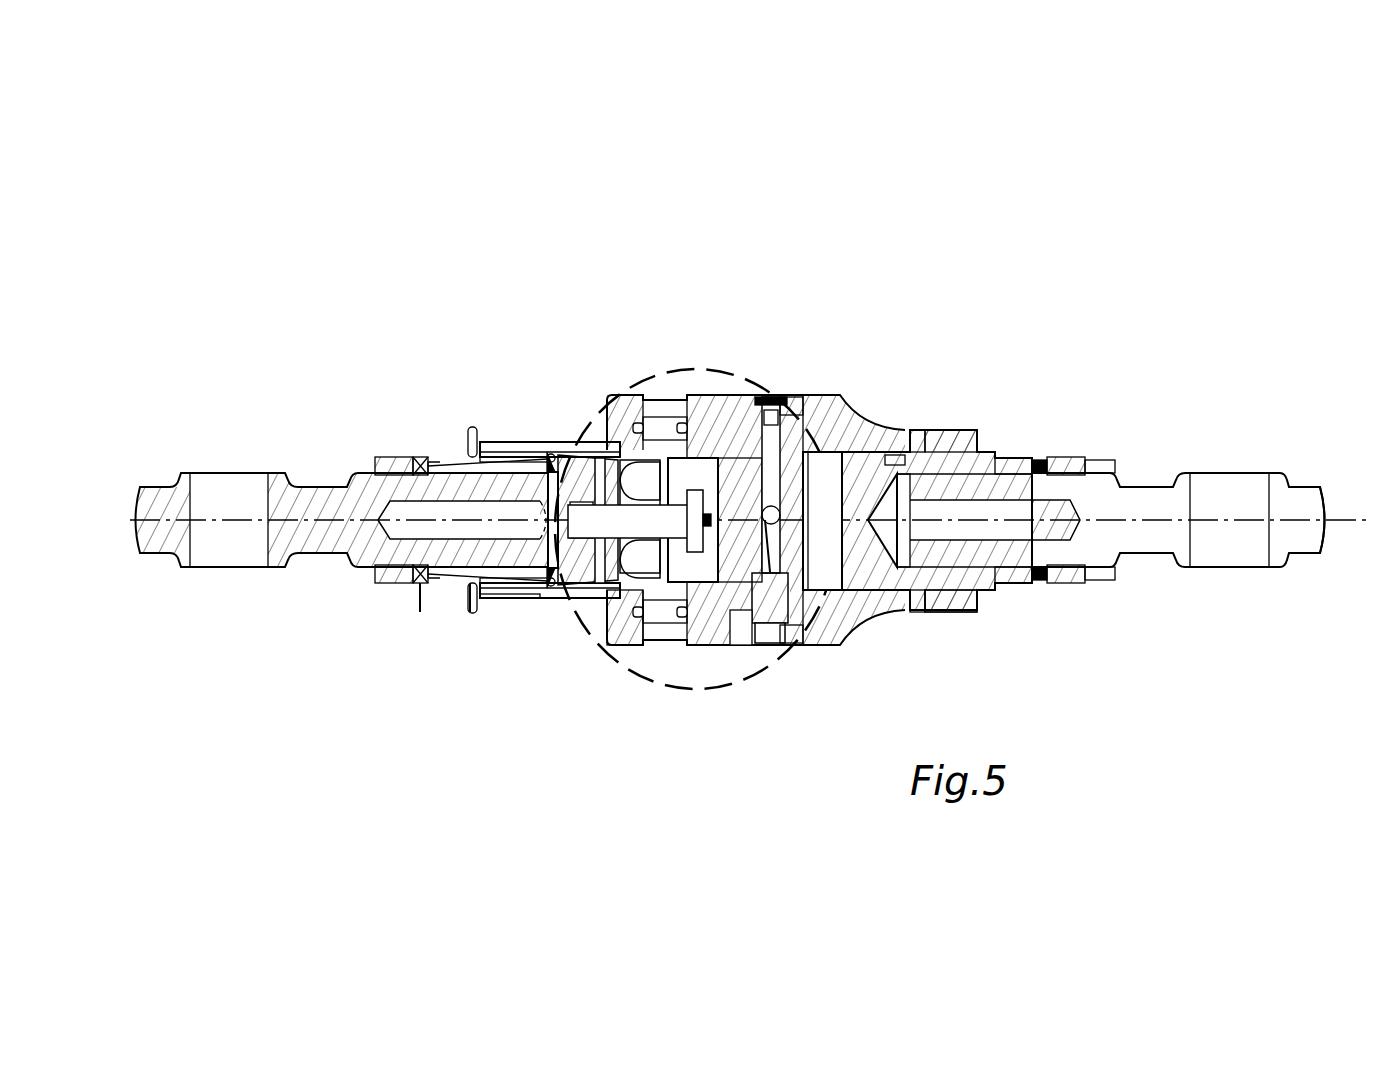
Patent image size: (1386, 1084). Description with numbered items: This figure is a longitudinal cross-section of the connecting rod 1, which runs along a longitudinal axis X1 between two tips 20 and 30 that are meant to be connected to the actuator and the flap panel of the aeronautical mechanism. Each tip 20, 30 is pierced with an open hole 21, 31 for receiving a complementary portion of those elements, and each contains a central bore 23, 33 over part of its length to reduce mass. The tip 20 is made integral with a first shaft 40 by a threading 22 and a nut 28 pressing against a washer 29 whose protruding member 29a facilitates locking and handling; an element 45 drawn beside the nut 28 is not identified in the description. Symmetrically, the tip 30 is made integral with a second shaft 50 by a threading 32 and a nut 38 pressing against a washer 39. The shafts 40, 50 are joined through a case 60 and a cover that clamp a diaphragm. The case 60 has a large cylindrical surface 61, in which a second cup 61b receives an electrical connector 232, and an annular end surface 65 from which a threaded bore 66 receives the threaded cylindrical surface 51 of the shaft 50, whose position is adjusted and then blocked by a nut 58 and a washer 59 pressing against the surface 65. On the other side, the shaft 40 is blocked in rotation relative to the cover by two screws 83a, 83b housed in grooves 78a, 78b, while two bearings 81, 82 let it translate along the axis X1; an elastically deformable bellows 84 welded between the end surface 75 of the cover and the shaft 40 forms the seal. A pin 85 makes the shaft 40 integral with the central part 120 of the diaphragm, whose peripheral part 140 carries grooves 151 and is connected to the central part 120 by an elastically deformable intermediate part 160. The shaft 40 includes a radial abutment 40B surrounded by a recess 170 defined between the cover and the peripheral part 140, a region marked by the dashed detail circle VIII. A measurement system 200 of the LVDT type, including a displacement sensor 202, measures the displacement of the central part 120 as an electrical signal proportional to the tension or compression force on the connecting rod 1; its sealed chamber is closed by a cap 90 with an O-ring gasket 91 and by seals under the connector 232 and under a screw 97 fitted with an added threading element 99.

The connecting rod 1 is at (751, 324).
The longitudinal axis X1 is at (722, 521).
The tip 20 is at (150, 496).
The open hole 21 is at (215, 470).
The threading 22 is at (458, 466).
The central bore 23 is at (462, 520).
The nut 28 is at (375, 575).
The washer 29 is at (415, 586).
The protruding member 29a is at (420, 600).
The tip 30 is at (1292, 495).
The open hole 31 is at (1222, 475).
The threading 32 is at (1038, 582).
The central bore 33 is at (995, 520).
The nut 38 is at (1085, 472).
The washer 39 is at (1055, 457).
The first shaft 40 is at (518, 440).
The abutment 40B is at (632, 462).
The retaining ring 45 is at (428, 460).
The second shaft 50 is at (1008, 458).
The threaded cylindrical surface 51 is at (885, 462).
The nut 58 is at (950, 438).
The washer 59 is at (918, 440).
The case 60 is at (832, 415).
The cylindrical surface 61 is at (820, 392).
The second cup 61b is at (812, 648).
The second annular end surface 65 is at (940, 605).
The threaded bore 66 is at (880, 455).
The second annular end surface 75 is at (470, 600).
The groove 78a is at (545, 442).
The groove 78b is at (510, 598).
The bearing 81 is at (560, 598).
The bearing 82 is at (488, 598).
The screw 83a is at (551, 452).
The screw 83b is at (551, 590).
The elastically deformable bellows 84 is at (470, 430).
The pin 85 is at (580, 470).
The cap 90 is at (890, 595).
The O-ring gasket 91 is at (880, 560).
The screw 97 is at (770, 397).
The added threading element 99 is at (797, 403).
The central part 120 is at (612, 630).
The peripheral part 140 is at (740, 500).
The grooves 151 is at (656, 395).
The intermediate part 160 is at (700, 650).
The recess 170 is at (599, 458).
The measurement system 200 is at (756, 590).
The displacement sensor 202 is at (688, 490).
The electrical connector 232 is at (772, 640).
The detail VIII is at (778, 395).